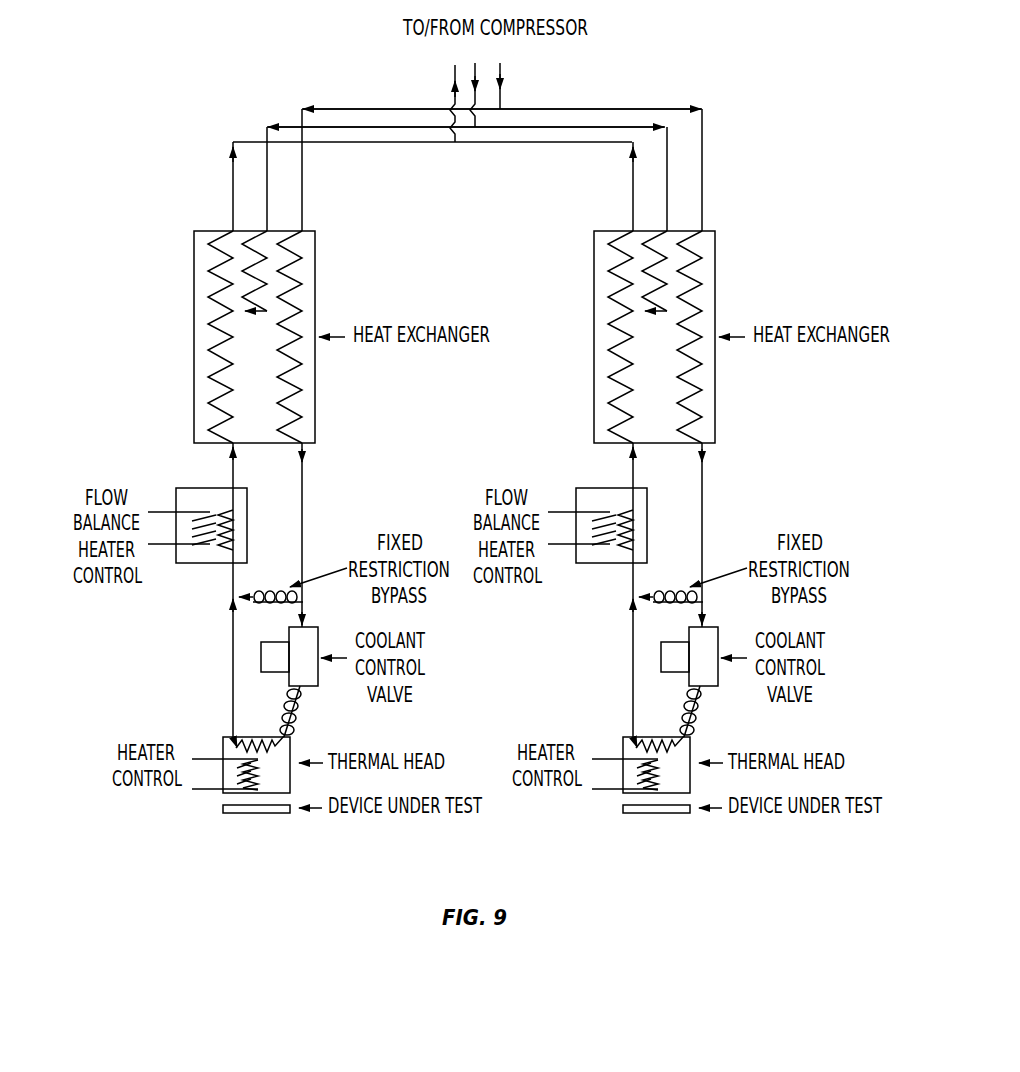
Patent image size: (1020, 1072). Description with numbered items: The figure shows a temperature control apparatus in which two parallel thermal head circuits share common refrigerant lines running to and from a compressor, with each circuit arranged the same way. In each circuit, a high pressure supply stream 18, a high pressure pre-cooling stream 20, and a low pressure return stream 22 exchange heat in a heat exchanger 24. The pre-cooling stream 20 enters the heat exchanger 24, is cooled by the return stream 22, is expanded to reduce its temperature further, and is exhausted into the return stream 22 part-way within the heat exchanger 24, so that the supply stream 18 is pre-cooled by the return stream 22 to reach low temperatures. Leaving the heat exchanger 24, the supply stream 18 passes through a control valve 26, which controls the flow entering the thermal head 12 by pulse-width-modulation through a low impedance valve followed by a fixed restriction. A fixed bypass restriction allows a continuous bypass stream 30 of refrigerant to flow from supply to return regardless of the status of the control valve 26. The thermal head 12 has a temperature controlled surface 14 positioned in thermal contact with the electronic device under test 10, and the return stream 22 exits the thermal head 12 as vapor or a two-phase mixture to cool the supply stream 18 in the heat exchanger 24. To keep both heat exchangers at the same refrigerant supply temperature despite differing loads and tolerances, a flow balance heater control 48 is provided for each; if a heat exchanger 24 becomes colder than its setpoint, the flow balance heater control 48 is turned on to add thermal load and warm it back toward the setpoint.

The electronic device under test 10 is at (222, 808).
The thermal head 12 is at (292, 746).
The temperature controlled surface 14 is at (233, 794).
The high pressure supply stream 18 is at (500, 100).
The high pressure pre-cooling stream 20 is at (475, 63).
The low pressure return stream 22 is at (236, 466).
The heat exchanger 24 is at (194, 275).
The control valve 26 is at (318, 634).
The bypass stream 30 is at (261, 590).
The flow balance heater control 48 is at (187, 487).